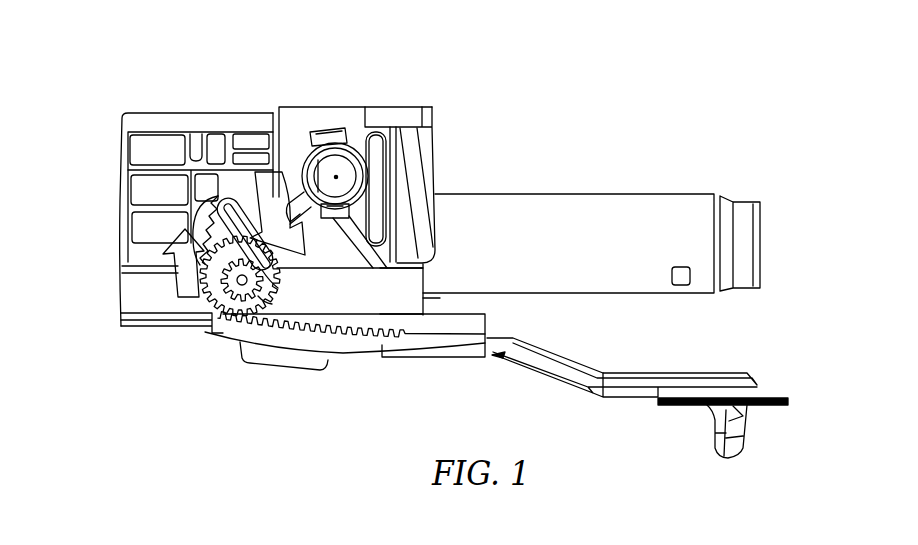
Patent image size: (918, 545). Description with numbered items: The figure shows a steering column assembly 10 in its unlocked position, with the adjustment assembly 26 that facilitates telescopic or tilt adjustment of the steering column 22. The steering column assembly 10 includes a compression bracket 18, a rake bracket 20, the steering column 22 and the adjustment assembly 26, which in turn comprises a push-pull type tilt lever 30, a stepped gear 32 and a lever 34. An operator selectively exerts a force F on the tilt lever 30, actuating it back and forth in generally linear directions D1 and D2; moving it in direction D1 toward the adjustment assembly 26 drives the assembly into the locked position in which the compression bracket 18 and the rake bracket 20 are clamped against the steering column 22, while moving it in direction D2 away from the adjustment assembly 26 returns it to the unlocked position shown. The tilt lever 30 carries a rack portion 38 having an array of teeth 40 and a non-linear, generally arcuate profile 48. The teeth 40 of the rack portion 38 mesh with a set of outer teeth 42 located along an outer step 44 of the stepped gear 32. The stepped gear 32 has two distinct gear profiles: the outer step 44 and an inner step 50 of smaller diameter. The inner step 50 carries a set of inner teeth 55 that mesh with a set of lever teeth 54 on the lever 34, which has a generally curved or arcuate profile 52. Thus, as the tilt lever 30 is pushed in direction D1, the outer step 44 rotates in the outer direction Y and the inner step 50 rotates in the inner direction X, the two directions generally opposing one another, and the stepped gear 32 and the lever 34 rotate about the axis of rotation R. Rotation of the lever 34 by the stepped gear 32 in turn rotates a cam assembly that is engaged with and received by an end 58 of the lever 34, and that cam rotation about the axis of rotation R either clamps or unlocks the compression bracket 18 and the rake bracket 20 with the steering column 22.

The steering column assembly 10 is at (497, 121).
The compression bracket 18 is at (417, 298).
The rake bracket 20 is at (405, 190).
The steering column 22 is at (566, 203).
The adjustment assembly 26 is at (354, 136).
The tilt lever 30 is at (603, 376).
The stepped gear 32 is at (195, 303).
The lever 34 is at (342, 228).
The rack portion 38 is at (353, 354).
The teeth 40 is at (383, 318).
The outer teeth 42 is at (265, 308).
The outer step 44 is at (200, 238).
The arcuate profile 48 is at (277, 364).
The inner step 50 is at (230, 314).
The arcuate profile 52 is at (255, 235).
The lever teeth 54 is at (280, 300).
The inner teeth 55 is at (240, 315).
The end 58 is at (303, 146).
The axis of rotation R is at (338, 177).
The inner direction X is at (277, 213).
The outer direction Y is at (183, 263).
The force F is at (808, 385).
The direction D1 is at (714, 470).
The direction D2 is at (736, 484).